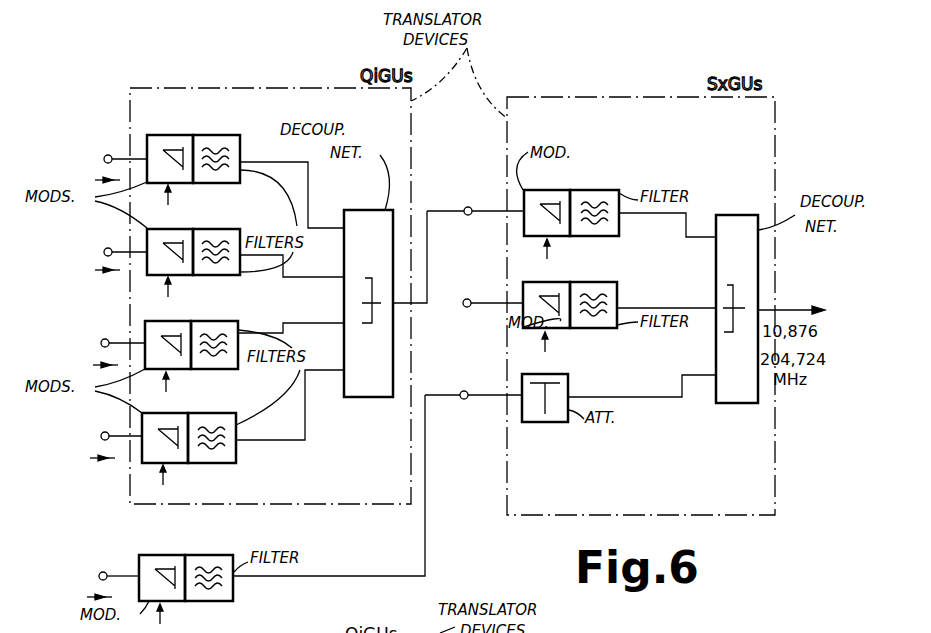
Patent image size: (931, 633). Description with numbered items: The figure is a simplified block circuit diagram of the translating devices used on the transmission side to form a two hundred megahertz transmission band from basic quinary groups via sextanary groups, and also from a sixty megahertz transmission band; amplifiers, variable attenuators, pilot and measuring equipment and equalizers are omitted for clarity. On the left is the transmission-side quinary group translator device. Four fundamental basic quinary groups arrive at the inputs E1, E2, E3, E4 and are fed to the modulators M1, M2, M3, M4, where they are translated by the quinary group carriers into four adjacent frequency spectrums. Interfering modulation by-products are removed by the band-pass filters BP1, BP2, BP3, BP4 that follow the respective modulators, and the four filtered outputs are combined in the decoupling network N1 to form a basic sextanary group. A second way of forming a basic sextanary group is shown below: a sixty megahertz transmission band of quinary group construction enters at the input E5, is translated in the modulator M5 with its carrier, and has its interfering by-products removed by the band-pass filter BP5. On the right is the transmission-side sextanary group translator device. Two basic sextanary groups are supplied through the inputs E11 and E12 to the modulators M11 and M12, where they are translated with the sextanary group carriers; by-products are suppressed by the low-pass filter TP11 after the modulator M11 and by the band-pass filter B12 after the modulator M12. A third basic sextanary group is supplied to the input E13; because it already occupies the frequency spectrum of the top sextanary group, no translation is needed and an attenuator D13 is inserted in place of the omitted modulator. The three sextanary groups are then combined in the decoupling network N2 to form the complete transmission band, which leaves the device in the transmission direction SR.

The input E1 is at (121, 144).
The input E2 is at (121, 238).
The input E3 is at (118, 331).
The input E4 is at (117, 425).
The input E5 is at (113, 563).
The modulator M1 is at (204, 160).
The modulator M2 is at (203, 254).
The modulator M3 is at (202, 347).
The modulator M4 is at (200, 440).
The modulator M5 is at (197, 580).
The band-pass filter BP1 is at (268, 171).
The band-pass filter BP2 is at (268, 243).
The band-pass filter BP3 is at (267, 335).
The band-pass filter BP4 is at (266, 416).
The band-pass filter BP5 is at (305, 498).
The decoupling network N1 is at (385, 292).
The decoupling network N2 is at (737, 296).
The input E11 is at (475, 193).
The input E12 is at (493, 292).
The input E13 is at (473, 381).
The modulator M11 is at (592, 215).
The low-pass filter TP11 is at (643, 203).
The modulator M12 is at (590, 307).
The band-pass filter B12 is at (643, 294).
The attenuator D13 is at (619, 388).
The transmission direction SR is at (791, 299).